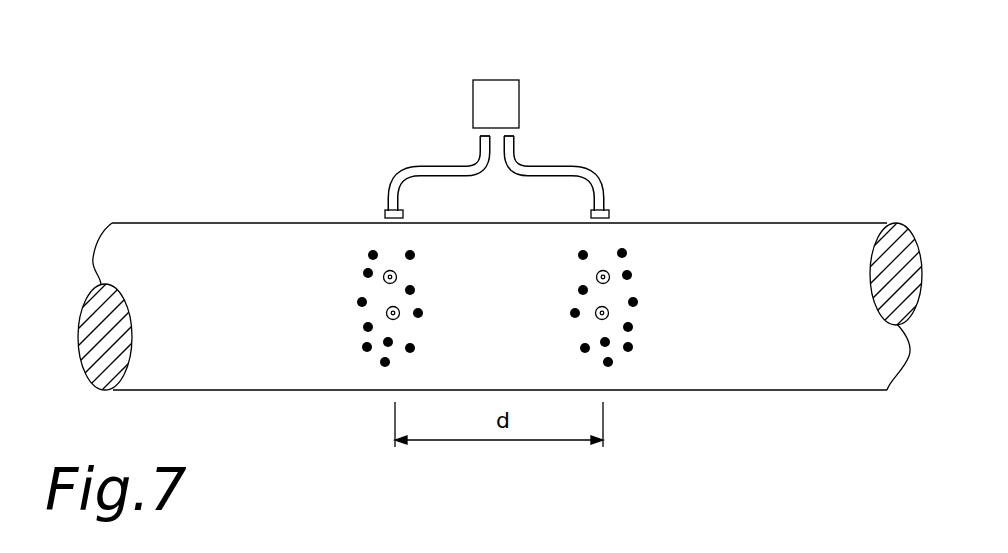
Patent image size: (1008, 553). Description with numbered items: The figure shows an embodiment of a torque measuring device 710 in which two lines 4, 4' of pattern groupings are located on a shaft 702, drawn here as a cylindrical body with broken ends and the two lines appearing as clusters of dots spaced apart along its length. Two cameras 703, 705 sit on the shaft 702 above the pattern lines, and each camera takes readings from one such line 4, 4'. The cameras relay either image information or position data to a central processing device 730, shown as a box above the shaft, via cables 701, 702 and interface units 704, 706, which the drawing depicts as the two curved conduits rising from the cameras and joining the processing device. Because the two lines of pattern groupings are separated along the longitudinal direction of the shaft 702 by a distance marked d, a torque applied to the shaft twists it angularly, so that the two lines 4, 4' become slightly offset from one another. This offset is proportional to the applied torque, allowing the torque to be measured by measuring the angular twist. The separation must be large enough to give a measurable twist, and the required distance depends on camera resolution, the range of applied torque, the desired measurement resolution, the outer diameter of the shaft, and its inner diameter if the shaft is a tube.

The central processing device 730 is at (498, 87).
The torque measuring device 710 is at (630, 63).
The interface unit 706 is at (483, 133).
The interface unit 704 is at (510, 137).
The shaft 702 is at (432, 168).
The cable 701 is at (563, 169).
The camera 705 is at (386, 213).
The camera 703 is at (610, 213).
The line of pattern groupings 4 is at (633, 347).
The line of pattern groupings 4' is at (360, 349).